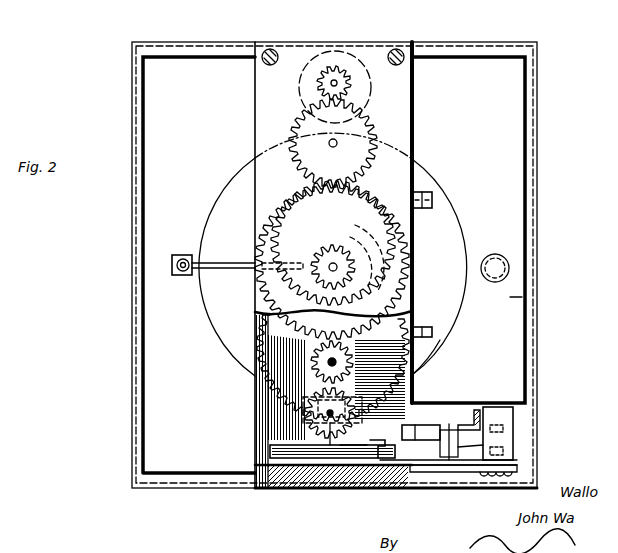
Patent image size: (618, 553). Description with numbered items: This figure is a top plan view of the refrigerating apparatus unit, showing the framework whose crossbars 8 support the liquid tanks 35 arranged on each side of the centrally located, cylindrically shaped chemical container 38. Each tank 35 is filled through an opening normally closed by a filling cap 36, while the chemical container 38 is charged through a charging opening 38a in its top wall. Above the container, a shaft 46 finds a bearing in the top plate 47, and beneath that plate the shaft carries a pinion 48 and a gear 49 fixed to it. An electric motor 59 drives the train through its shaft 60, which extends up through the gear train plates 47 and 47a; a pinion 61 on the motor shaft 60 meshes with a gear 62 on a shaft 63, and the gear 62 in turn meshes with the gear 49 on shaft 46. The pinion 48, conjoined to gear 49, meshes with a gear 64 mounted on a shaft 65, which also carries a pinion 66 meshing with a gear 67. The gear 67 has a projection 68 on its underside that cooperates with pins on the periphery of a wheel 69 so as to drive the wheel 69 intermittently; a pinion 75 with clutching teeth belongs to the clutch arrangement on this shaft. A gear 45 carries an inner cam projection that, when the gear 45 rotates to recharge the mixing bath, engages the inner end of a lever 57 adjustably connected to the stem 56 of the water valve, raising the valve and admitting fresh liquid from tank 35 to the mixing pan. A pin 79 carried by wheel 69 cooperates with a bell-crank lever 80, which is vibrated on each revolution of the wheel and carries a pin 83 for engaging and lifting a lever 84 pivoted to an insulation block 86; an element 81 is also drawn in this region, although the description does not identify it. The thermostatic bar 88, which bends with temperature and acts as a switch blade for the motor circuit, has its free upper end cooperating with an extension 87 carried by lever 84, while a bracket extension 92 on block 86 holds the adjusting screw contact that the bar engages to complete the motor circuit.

The crossbars 8 is at (132, 435).
The liquid tanks 35 is at (157, 285).
The filling cap 36 is at (508, 263).
The chemical container 38 is at (230, 197).
The charging opening 38a is at (447, 295).
The gear 45 is at (393, 243).
The shaft 46 is at (331, 265).
The top plate 47 is at (402, 107).
The gear train plate 47a is at (260, 462).
The pinion 48 is at (330, 262).
The gear 49 is at (293, 197).
The valve stem 56 is at (183, 256).
The lever 57 is at (217, 266).
The electric motor 59 is at (363, 83).
The motor shaft 60 is at (333, 78).
The pinion 61 is at (343, 72).
The gear 62 is at (310, 120).
The shaft 63 is at (337, 142).
The gear 64 is at (275, 353).
The shaft 65 is at (333, 321).
The pinion 66 is at (412, 376).
The gear 67 is at (293, 417).
The projection 68 is at (300, 462).
The wheel 69 is at (365, 456).
The pinion 75 is at (262, 384).
The pin 79 is at (380, 460).
The bell-crank lever 80 is at (407, 460).
The pin 81 is at (447, 435).
The pin 83 is at (446, 449).
The lever 84 is at (427, 428).
The insulation block 86 is at (513, 413).
The extension 87 is at (458, 447).
The thermostatic bar 88 is at (450, 458).
The bracket extension 92 is at (474, 422).